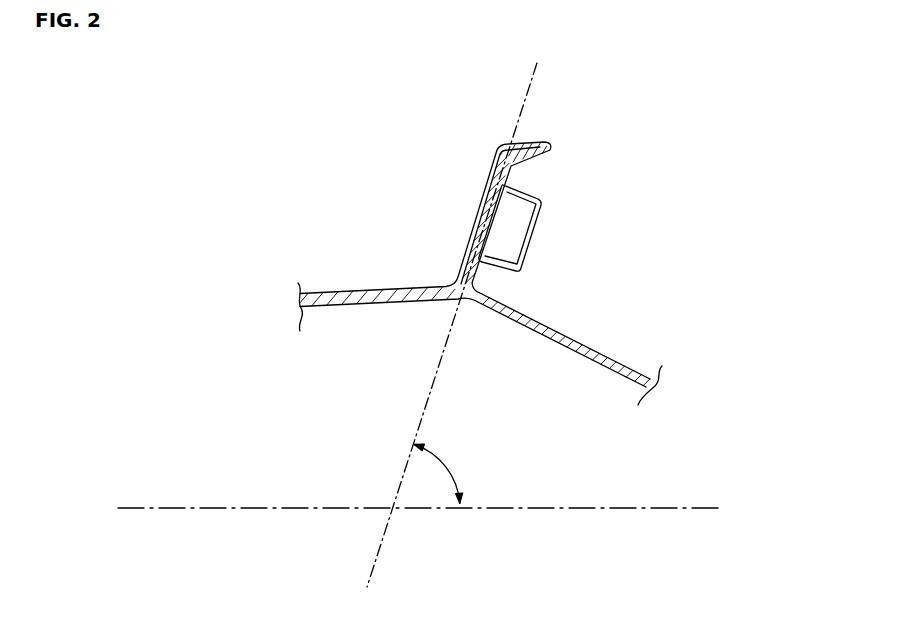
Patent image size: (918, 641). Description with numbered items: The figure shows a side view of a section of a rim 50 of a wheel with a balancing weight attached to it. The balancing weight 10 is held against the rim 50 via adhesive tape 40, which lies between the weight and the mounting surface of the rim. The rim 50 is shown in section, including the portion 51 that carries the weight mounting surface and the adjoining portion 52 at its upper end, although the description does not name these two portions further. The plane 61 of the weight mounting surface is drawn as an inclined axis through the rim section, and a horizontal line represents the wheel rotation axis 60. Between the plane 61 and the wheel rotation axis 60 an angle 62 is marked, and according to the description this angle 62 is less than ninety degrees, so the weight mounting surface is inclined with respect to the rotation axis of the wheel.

The balancing weight 10 is at (508, 228).
The adhesive tape 40 is at (499, 175).
The rim 50 is at (480, 236).
The upright leg 51 is at (478, 208).
The hooked tip 52 is at (534, 142).
The wheel rotation axis 60 is at (560, 508).
The plane of the weight mounting surface 61 is at (455, 314).
The angle 62 is at (447, 465).